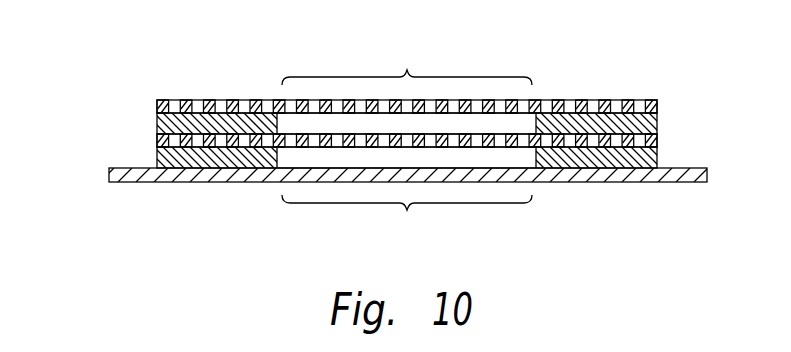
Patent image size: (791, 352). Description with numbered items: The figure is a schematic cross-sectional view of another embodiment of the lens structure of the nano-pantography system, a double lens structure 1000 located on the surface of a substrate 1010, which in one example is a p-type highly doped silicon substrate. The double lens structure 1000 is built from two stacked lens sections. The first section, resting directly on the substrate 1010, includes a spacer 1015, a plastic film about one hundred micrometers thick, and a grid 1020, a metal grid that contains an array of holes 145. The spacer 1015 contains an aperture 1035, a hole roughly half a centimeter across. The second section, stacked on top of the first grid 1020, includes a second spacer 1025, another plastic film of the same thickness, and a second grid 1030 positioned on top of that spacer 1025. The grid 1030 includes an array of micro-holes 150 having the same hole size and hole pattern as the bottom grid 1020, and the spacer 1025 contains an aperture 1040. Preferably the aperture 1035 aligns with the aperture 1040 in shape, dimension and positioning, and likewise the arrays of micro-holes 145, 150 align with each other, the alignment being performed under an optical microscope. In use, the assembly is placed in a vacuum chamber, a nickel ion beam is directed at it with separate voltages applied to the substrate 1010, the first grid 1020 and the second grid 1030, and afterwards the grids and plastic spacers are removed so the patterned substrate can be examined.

The double lens structure 1000 is at (634, 34).
The substrate 1010 is at (110, 173).
The spacer 1015 is at (657, 160).
The grid 1020 is at (157, 140).
The spacer 1025 is at (657, 122).
The grid 1030 is at (157, 104).
The aperture 1035 is at (407, 217).
The aperture 1040 is at (407, 62).
The array of holes 145 is at (240, 158).
The array of micro-holes 150 is at (221, 90).